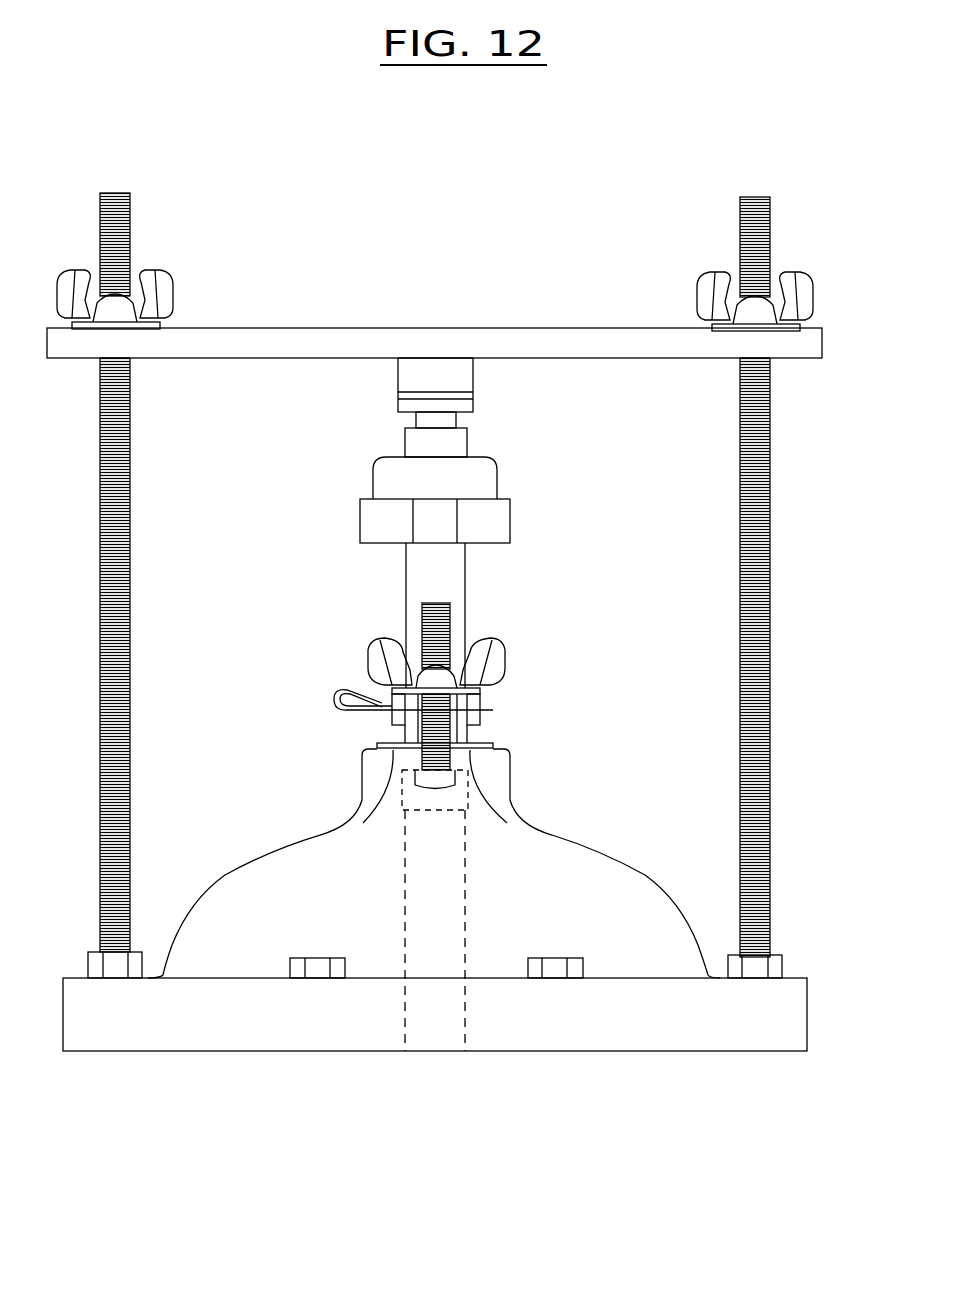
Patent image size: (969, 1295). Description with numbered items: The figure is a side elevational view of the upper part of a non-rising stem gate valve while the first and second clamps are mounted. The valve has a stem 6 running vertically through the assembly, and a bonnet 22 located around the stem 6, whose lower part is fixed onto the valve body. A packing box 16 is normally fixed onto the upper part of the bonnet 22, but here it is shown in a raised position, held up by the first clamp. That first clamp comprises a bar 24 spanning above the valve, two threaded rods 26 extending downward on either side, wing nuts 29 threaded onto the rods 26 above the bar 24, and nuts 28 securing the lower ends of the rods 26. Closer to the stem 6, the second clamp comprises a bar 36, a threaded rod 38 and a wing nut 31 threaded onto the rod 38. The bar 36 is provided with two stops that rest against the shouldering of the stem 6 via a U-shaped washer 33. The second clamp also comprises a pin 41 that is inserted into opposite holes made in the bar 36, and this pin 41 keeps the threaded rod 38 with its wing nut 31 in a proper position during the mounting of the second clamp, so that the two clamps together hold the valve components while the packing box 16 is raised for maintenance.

The stem 6 is at (415, 556).
The packing box 16 is at (422, 492).
The bonnet 22 is at (552, 917).
The bar 24 is at (580, 340).
The threaded rods 26 is at (127, 422).
The nuts 28 is at (122, 968).
The wing nuts 29 is at (152, 290).
The wing nut 31 is at (382, 650).
The U-shaped washer 33 is at (375, 740).
The bar 36 is at (480, 706).
The threaded rod 38 is at (450, 612).
The pin 41 is at (333, 702).